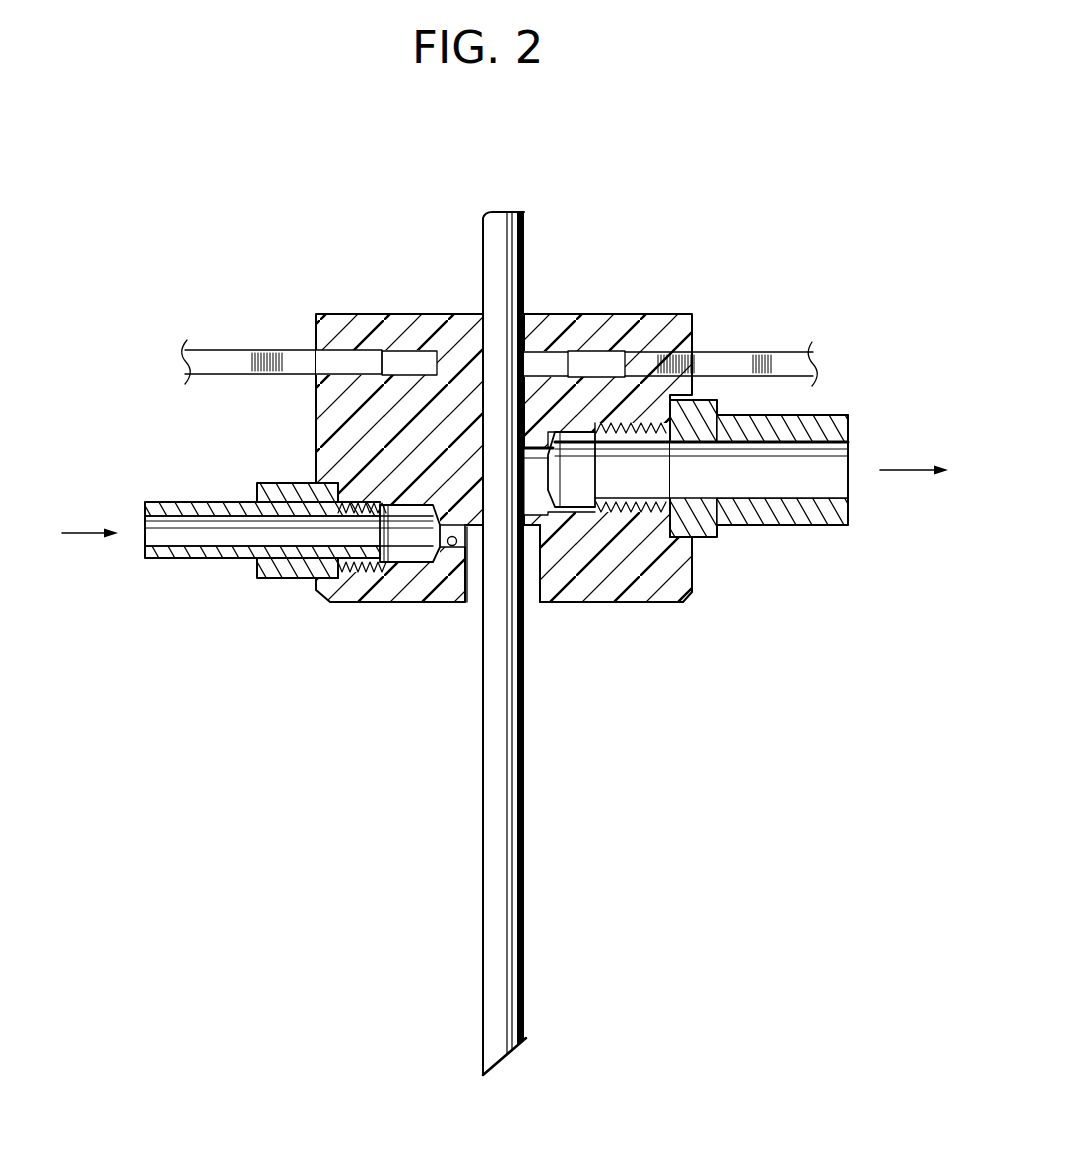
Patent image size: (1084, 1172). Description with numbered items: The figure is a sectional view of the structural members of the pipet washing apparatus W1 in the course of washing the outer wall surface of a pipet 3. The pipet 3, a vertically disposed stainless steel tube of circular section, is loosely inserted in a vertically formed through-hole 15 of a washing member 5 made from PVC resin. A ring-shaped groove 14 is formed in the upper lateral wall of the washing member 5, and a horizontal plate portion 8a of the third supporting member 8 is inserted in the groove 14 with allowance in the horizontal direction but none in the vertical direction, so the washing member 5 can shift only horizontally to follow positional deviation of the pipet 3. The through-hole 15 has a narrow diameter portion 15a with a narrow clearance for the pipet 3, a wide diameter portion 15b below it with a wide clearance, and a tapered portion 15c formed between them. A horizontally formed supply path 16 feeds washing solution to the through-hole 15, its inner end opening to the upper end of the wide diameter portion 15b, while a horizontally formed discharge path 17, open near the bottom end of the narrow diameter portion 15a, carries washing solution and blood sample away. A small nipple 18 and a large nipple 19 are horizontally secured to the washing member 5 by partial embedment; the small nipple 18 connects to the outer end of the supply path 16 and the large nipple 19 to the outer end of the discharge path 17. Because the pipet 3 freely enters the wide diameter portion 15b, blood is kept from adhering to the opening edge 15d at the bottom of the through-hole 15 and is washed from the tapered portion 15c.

The pipet 3 is at (508, 280).
The washing member 5 is at (708, 603).
The third supporting member 8 is at (765, 352).
The horizontal plate portion 8a is at (238, 358).
The ring-shaped groove 14 is at (405, 362).
The through-hole 15 is at (482, 463).
The narrow diameter portion 15a is at (482, 432).
The wide diameter portion 15b is at (472, 573).
The tapered portion 15c is at (540, 530).
The opening edge 15d is at (540, 603).
The supply path 16 is at (450, 550).
The discharge path 17 is at (560, 462).
The small nipple 18 is at (165, 560).
The large nipple 19 is at (830, 415).
The pipet washing apparatus W1 is at (292, 249).